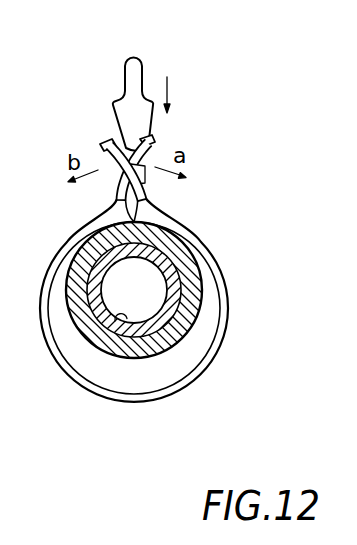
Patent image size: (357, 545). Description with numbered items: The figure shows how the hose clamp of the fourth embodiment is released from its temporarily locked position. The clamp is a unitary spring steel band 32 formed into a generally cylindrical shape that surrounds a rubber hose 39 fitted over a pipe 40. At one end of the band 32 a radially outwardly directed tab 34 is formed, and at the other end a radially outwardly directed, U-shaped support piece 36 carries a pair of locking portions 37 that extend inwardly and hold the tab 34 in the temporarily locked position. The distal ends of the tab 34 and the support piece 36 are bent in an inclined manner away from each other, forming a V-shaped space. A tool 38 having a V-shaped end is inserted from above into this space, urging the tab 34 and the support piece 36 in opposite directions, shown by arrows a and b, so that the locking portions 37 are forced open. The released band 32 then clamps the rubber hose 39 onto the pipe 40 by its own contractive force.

The band 32 is at (216, 347).
The tab 34 is at (156, 147).
The support piece 36 is at (104, 151).
The locking portions 37 is at (146, 182).
The tool 38 is at (143, 63).
The rubber hose 39 is at (94, 341).
The pipe 40 is at (126, 316).